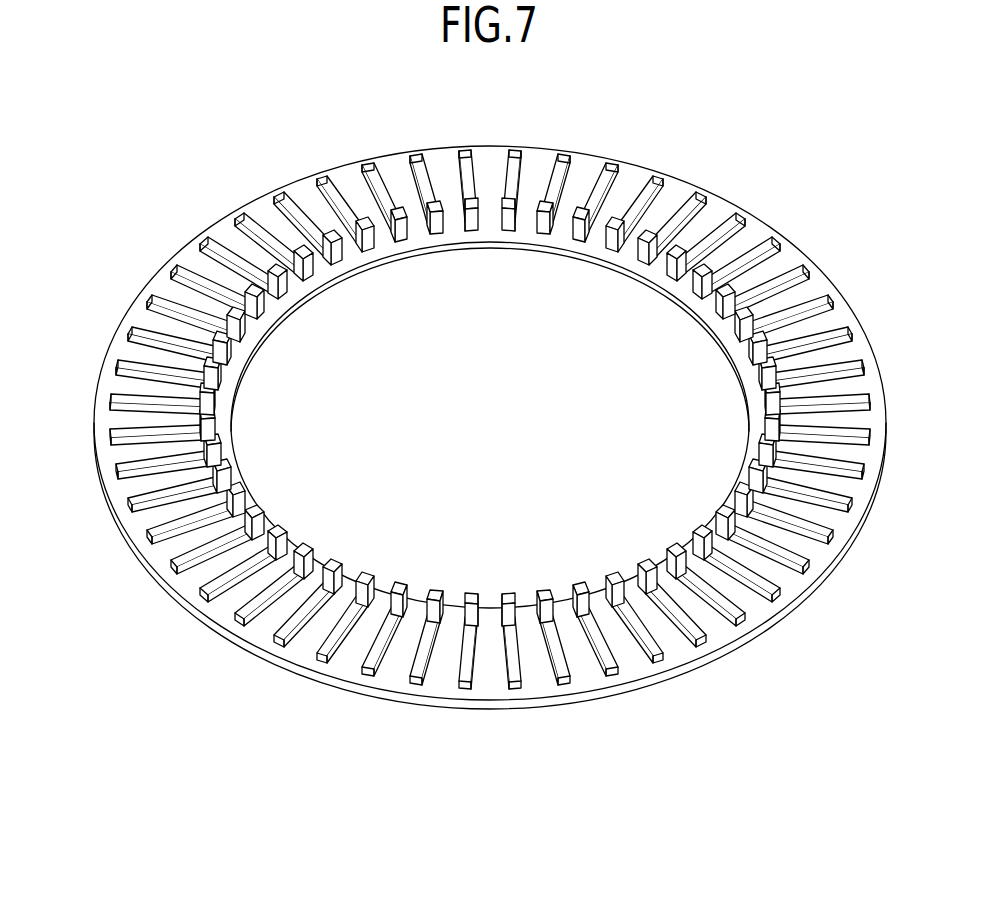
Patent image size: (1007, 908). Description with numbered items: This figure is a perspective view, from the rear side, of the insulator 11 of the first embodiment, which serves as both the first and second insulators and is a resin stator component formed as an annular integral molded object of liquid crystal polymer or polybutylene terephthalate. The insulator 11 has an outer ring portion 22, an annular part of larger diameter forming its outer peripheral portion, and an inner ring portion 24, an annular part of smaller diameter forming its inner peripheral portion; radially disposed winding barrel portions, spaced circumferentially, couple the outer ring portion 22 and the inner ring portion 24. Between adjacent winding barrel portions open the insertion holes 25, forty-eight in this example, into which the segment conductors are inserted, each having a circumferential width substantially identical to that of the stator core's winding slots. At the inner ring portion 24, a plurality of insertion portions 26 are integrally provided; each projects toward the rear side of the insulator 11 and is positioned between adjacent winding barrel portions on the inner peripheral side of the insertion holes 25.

The insulator 11 is at (262, 169).
The outer ring portion 22 is at (160, 585).
The inner ring portion 24 is at (232, 398).
The insertion holes 25 is at (468, 160).
The insertion portions 26 is at (306, 263).